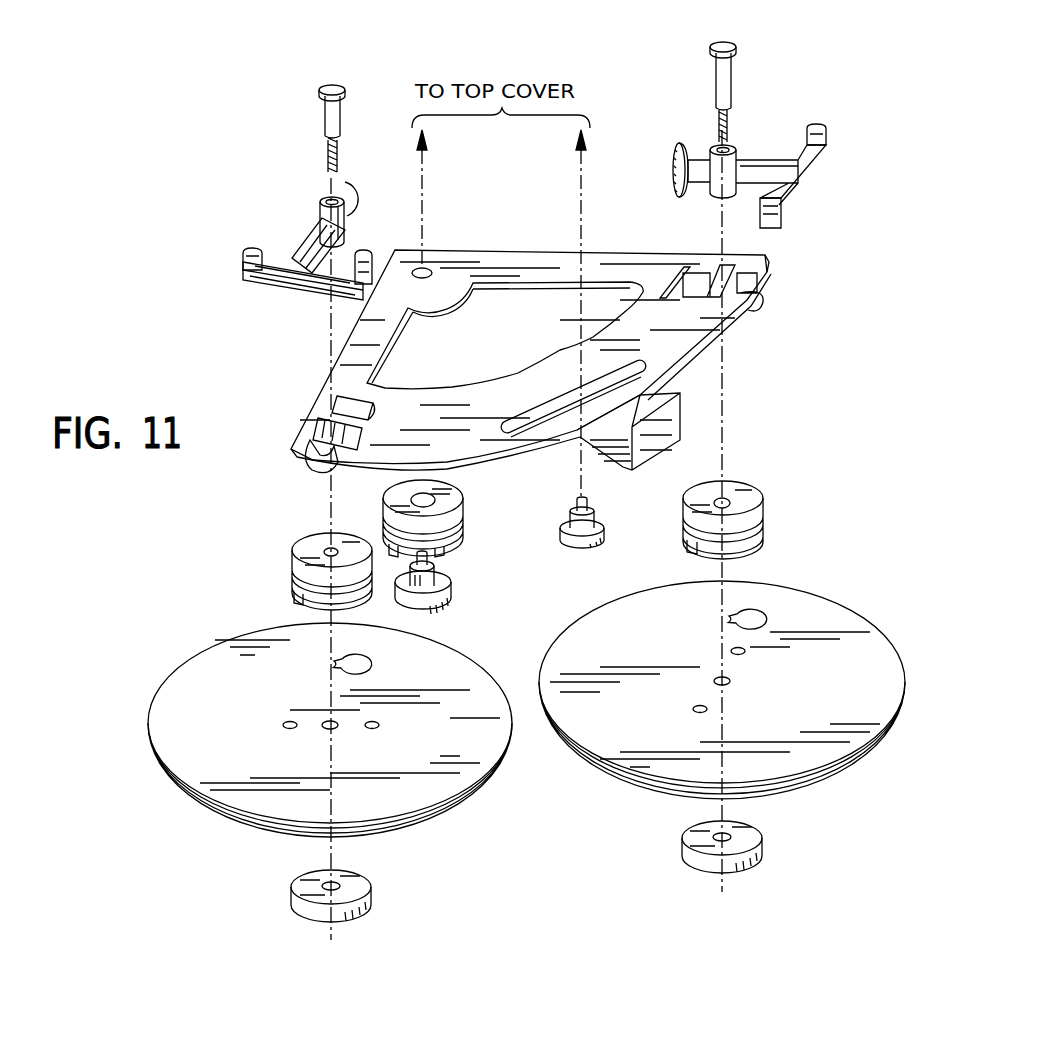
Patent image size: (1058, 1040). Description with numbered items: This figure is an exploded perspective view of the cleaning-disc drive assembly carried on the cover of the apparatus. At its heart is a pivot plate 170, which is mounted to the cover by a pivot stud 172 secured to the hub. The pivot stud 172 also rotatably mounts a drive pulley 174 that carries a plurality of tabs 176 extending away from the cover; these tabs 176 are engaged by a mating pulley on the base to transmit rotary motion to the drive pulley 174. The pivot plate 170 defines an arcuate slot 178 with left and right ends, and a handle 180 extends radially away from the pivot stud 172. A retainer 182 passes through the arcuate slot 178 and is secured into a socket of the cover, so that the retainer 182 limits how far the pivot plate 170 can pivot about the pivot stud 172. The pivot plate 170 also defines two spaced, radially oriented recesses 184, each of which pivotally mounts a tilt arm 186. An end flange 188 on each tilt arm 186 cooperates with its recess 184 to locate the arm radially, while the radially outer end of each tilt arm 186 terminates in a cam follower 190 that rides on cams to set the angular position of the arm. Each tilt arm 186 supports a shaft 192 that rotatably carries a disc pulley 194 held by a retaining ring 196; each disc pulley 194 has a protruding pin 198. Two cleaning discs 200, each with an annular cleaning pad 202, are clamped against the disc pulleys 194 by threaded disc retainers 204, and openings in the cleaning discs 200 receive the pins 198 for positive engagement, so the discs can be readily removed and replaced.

The pivot plate 170 is at (612, 258).
The pivot stud 172 is at (451, 585).
The drive pulley 174 is at (458, 492).
The tabs 176 is at (396, 556).
The arcuate slot 178 is at (563, 398).
The handle 180 is at (655, 440).
The retainer 182 is at (561, 525).
The recesses 184 is at (318, 458).
The tilt arm 186 is at (322, 286).
The end flange 188 is at (358, 184).
The cam follower 190 is at (250, 250).
The shaft 192 is at (330, 82).
The disc pulley 194 is at (306, 548).
The retaining ring 196 is at (344, 662).
The protruding pin 198 is at (297, 600).
The cleaning disc 200 is at (464, 790).
The annular cleaning pad 202 is at (421, 832).
The disc retainer 204 is at (368, 882).